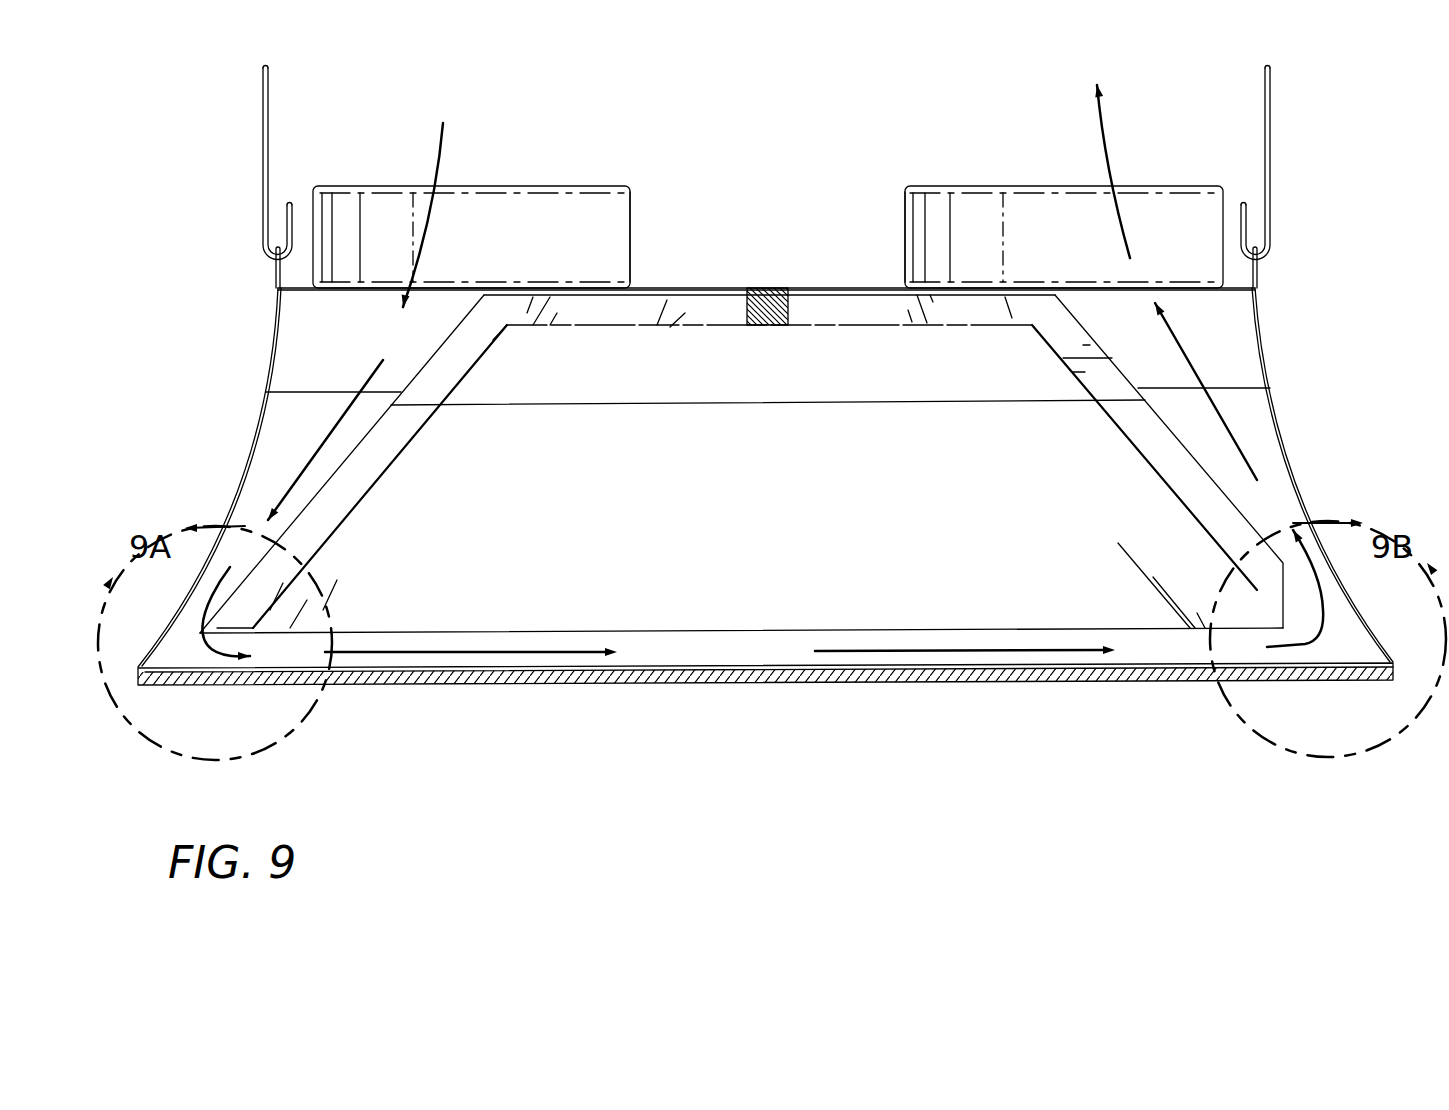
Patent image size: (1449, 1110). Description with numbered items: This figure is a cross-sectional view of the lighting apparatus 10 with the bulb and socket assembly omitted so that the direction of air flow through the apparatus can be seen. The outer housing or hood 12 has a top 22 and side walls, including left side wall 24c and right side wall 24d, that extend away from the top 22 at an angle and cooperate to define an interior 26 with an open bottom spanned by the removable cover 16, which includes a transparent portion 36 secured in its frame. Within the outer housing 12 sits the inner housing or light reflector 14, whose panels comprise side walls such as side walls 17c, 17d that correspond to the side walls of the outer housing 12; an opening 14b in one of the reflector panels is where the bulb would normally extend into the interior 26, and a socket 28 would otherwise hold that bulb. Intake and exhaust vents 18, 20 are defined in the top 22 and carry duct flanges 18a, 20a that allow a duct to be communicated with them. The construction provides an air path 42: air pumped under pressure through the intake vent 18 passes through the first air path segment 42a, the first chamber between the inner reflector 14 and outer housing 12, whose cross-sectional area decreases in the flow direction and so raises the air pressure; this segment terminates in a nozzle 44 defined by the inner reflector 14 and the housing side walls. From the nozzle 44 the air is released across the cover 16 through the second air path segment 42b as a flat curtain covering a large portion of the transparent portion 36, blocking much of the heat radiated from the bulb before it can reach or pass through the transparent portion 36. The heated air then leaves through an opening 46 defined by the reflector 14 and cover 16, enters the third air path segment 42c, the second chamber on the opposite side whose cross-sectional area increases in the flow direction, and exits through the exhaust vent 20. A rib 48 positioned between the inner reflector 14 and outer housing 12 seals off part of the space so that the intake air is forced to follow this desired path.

The lighting apparatus 10 is at (786, 137).
The outer housing 12 is at (1258, 296).
The inner housing 14 is at (410, 445).
The opening 14b is at (1143, 460).
The cover 16 is at (1090, 745).
The side wall 17c is at (1050, 350).
The side wall 17d is at (470, 372).
The intake vent 18 is at (471, 237).
The duct flange 18a is at (632, 220).
The exhaust vent 20 is at (1064, 237).
The duct flange 20a is at (905, 234).
The top 22 is at (690, 286).
The left side wall 24c is at (1265, 345).
The right side wall 24d is at (272, 325).
The interior 26 is at (768, 445).
The socket 28 is at (1300, 470).
The transparent portion 36 is at (925, 685).
The air path 42 is at (443, 123).
The first air path segment 42a is at (325, 440).
The second air path segment 42b is at (720, 651).
The third air path segment 42c is at (1206, 391).
The nozzle 44 is at (175, 648).
The opening 46 is at (1247, 607).
The rib 48 is at (768, 295).